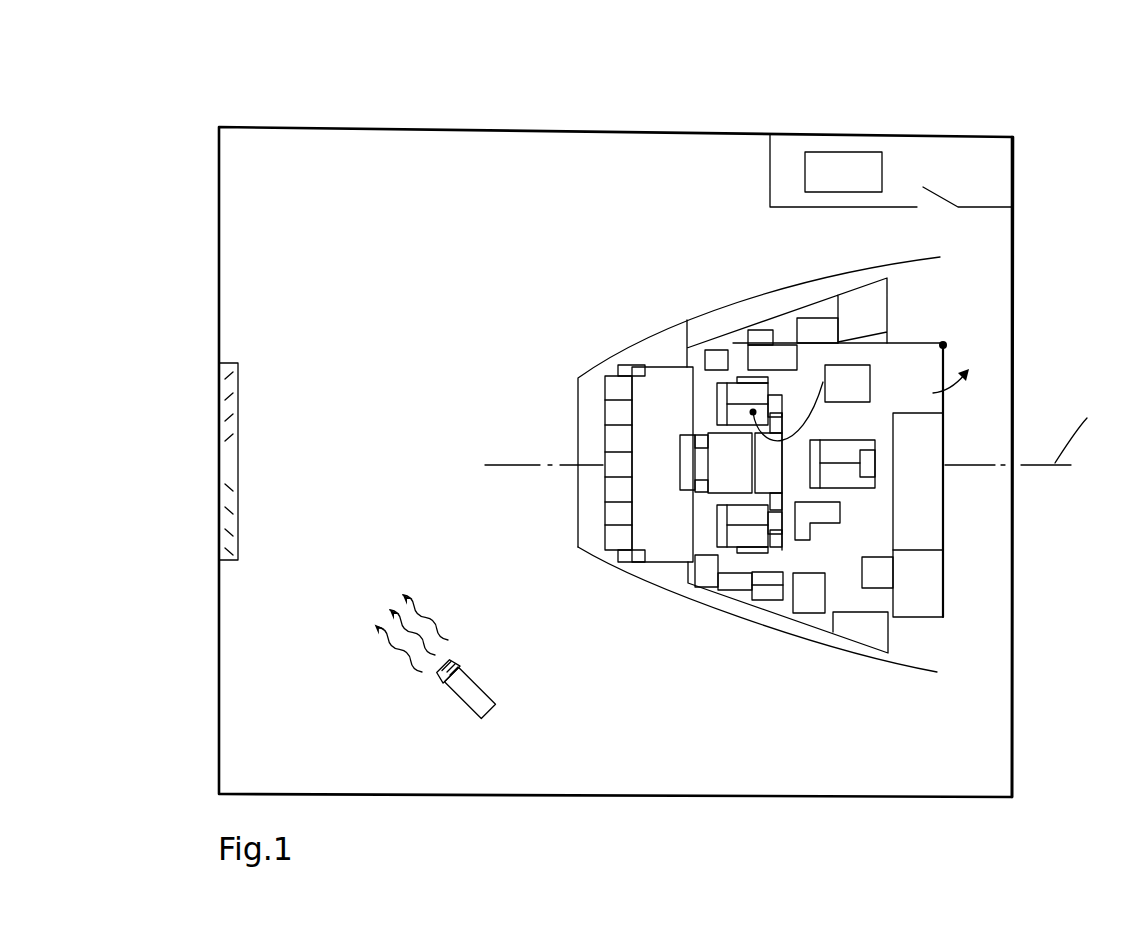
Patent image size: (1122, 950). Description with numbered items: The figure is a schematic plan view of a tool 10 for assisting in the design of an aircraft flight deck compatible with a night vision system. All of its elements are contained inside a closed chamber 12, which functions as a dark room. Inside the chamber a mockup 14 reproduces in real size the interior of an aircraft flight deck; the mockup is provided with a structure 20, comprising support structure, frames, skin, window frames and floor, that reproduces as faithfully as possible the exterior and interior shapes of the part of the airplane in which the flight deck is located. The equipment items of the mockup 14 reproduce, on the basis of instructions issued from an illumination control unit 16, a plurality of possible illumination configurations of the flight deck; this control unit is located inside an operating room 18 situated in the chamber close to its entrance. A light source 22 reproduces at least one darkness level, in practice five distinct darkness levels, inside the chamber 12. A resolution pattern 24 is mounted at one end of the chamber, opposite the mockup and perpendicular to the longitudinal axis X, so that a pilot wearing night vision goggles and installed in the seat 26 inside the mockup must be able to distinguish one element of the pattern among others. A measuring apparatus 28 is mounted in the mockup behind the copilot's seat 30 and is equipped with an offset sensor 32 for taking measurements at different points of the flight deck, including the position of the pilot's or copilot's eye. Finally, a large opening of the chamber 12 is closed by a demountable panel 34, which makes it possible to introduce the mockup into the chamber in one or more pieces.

The tool 10 is at (666, 468).
The chamber 12 is at (815, 815).
The mockup 14 is at (866, 668).
The illumination control unit 16 is at (843, 157).
The operating room 18 is at (770, 177).
The structure 20 is at (707, 608).
The light source 22 is at (497, 713).
The resolution pattern 24 is at (231, 362).
The seat 26 is at (757, 541).
The measuring apparatus 28 is at (870, 385).
The copilot's seat 30 is at (738, 390).
The offset sensor 32 is at (752, 413).
The panel 34 is at (1011, 320).